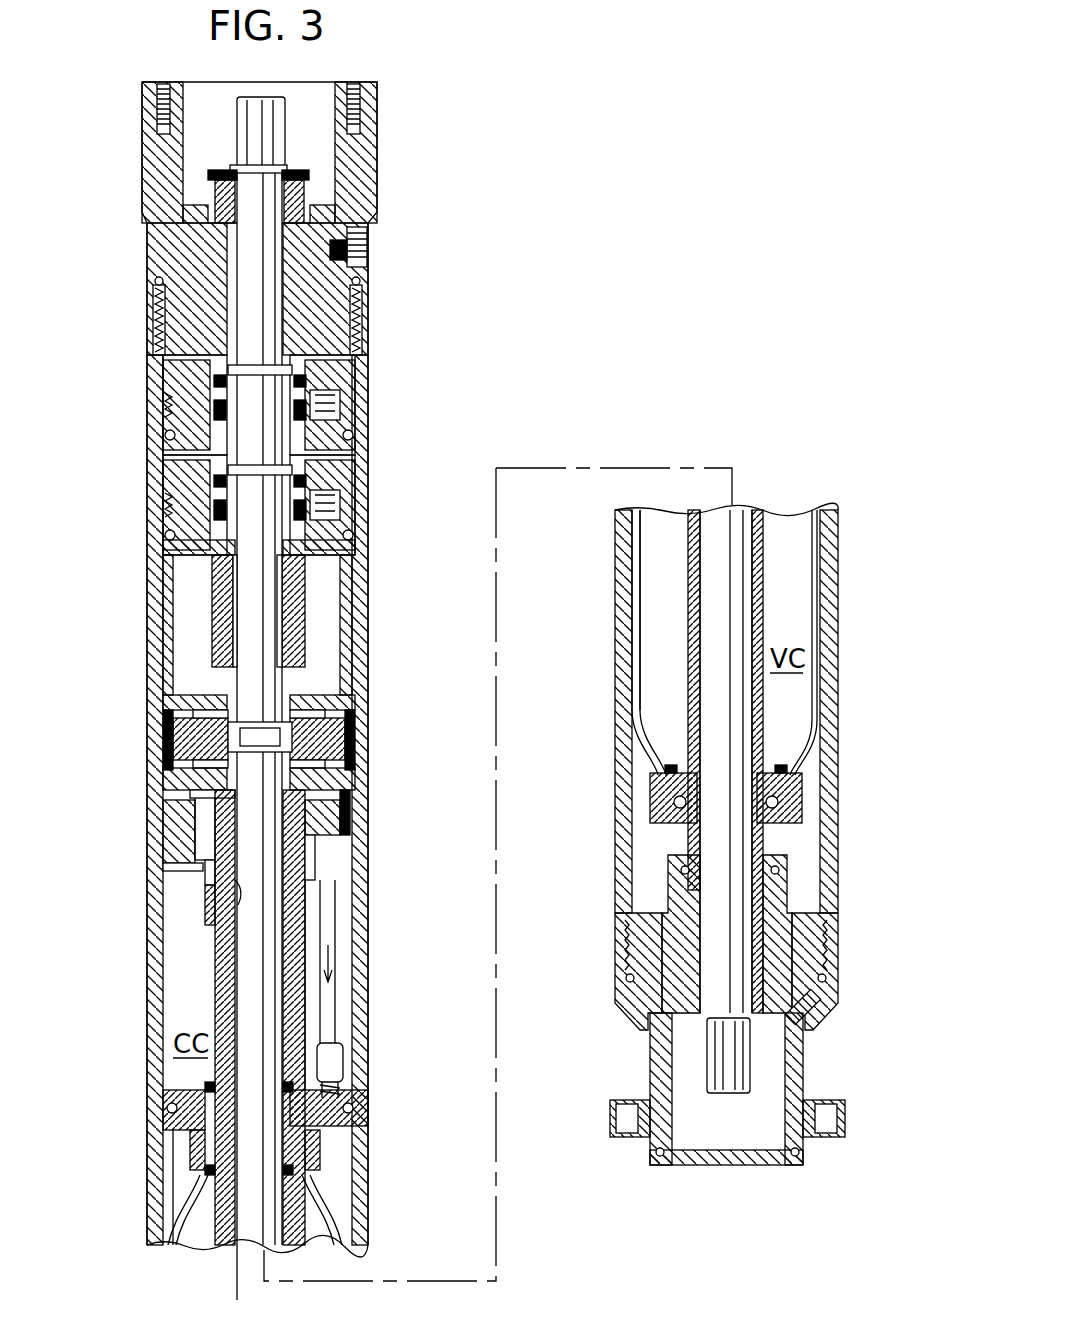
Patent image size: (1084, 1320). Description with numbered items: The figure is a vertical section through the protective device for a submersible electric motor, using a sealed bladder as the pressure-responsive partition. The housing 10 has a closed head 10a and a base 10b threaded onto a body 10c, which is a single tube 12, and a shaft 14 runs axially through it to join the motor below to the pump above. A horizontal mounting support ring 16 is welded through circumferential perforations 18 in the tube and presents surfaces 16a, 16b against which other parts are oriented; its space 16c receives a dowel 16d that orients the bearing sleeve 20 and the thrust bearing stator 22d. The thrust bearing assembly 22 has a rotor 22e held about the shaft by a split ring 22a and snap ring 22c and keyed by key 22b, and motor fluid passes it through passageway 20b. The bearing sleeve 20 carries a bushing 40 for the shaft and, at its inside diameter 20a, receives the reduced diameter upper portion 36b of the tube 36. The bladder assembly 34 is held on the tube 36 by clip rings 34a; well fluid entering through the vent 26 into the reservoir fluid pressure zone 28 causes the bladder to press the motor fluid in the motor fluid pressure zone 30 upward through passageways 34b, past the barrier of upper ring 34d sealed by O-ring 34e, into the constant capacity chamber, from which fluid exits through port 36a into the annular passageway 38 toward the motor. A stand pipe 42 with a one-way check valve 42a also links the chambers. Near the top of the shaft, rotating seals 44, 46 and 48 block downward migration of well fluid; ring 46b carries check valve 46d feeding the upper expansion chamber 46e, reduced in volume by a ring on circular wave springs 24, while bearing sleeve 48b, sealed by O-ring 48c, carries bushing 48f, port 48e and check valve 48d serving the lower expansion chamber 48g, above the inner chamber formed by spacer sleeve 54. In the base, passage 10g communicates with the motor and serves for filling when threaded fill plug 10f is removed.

The housing 10 is at (378, 193).
The closed head 10a is at (378, 158).
The base 10b is at (628, 998).
The body 10c is at (365, 588).
The threaded fill plug 10f is at (825, 1026).
The passage 10g is at (775, 937).
The single tube 12 is at (368, 630).
The shaft 14 is at (232, 128).
The horizontal mounting support ring 16 is at (195, 866).
The surface 16a is at (195, 808).
The surface 16b is at (205, 903).
The space 16c is at (300, 878).
The dowel 16d is at (350, 806).
The circumferential perforations 18 is at (170, 843).
The bearing sleeve 20 is at (208, 878).
The inside diameter 20a is at (210, 923).
The passageway 20b is at (330, 843).
The thrust bearing assembly 22 is at (345, 718).
The split ring 22a is at (166, 726).
The key 22b is at (172, 750).
The snap ring 22c is at (345, 773).
The thrust bearing stator 22d is at (175, 783).
The rotor 22e is at (345, 746).
The circular wave springs 24 is at (340, 404).
The vent 26 is at (662, 1038).
The reservoir fluid pressure zone 28 is at (652, 866).
The motor fluid pressure zone 30 is at (200, 1228).
The bladder assembly 34 is at (350, 1223).
The clip rings 34a is at (205, 1086).
The passageways 34b is at (195, 1183).
The upper ring 34d is at (180, 1113).
The O-ring 34e is at (345, 1110).
The tube 36 is at (222, 998).
The port 36a is at (235, 958).
The reduced diameter upper portion 36b is at (300, 933).
The annular passageway 38 is at (235, 1245).
The bushing 40 is at (305, 903).
The stand pipe 42 is at (335, 958).
The one-way check valve 42a is at (345, 1060).
The rotating seal 44 is at (212, 176).
The rotating seal 46 is at (185, 378).
The ring 46b is at (173, 426).
The check valve 46d is at (345, 428).
The upper expansion chamber 46e is at (340, 368).
The rotating seal 48 is at (180, 480).
The bearing sleeve 48b is at (170, 533).
The O-ring 48c is at (345, 533).
The one-way check valve 48d is at (340, 503).
The port 48e is at (200, 566).
The bushing 48f is at (218, 596).
The lower expansion chamber 48g is at (340, 474).
The spacer sleeve 54 is at (160, 646).